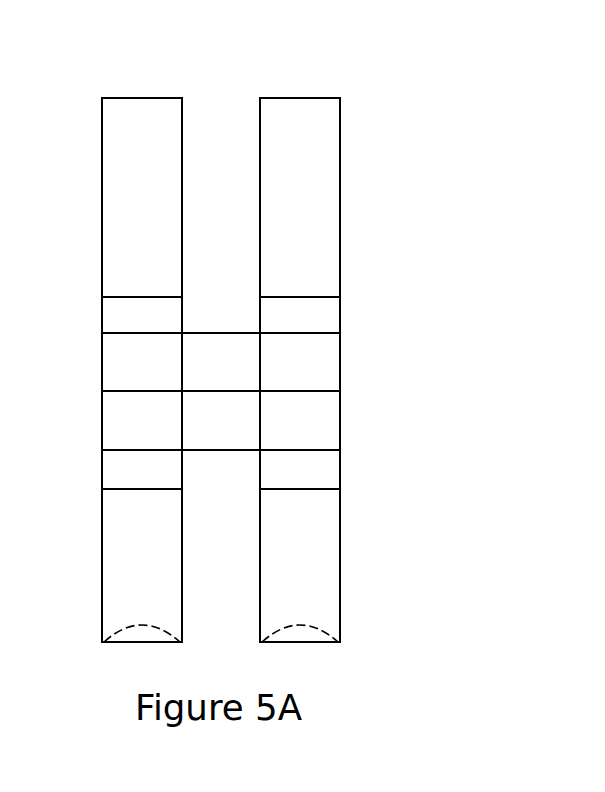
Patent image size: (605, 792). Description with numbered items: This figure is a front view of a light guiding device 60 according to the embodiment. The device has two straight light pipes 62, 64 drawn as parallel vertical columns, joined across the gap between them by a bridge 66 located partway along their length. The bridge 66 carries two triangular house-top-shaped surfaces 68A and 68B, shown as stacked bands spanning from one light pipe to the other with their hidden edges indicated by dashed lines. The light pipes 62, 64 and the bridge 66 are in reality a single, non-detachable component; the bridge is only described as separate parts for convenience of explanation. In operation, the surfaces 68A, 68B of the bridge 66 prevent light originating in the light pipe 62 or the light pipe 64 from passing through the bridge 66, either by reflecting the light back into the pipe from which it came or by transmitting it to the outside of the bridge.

The light guiding device 60 is at (454, 49).
The light pipe 62 is at (115, 195).
The light pipe 64 is at (328, 195).
The bridge 66 is at (231, 391).
The triangular house-top-shaped surface 68A is at (328, 362).
The triangular house-top-shaped surface 68B is at (328, 421).